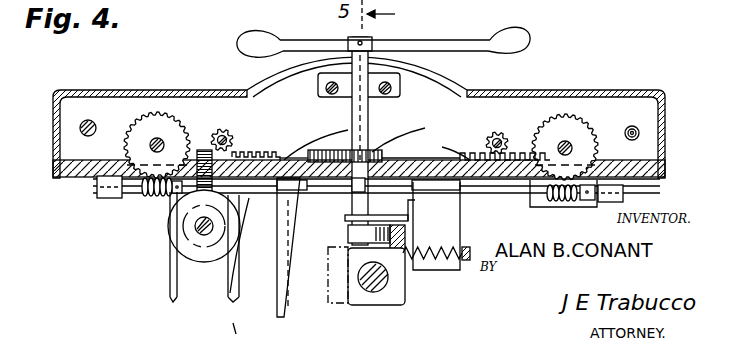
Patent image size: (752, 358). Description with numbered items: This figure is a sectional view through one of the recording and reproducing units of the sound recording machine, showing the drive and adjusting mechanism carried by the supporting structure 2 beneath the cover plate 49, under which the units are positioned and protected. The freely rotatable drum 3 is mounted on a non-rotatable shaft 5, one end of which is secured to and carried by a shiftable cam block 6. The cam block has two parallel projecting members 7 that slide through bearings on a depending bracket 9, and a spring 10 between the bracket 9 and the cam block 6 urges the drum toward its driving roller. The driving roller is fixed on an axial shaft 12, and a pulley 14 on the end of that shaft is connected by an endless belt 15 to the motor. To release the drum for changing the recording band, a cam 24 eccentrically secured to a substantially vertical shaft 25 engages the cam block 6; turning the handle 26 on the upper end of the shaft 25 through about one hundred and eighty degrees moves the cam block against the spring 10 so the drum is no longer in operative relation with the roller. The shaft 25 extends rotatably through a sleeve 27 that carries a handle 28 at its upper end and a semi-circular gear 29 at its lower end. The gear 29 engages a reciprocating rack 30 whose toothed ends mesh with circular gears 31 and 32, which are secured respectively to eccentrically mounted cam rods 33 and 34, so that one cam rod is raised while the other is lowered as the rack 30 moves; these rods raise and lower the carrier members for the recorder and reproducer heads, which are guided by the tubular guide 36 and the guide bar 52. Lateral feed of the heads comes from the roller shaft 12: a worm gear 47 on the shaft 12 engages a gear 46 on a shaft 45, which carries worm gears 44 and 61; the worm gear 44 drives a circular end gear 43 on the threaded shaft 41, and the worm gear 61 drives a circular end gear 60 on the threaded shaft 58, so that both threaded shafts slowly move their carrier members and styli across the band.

The supporting structure 2 is at (667, 173).
The drum 3 is at (230, 313).
The non-rotatable shaft 5 is at (376, 302).
The cam block 6 is at (372, 302).
The projecting members 7 is at (480, 215).
The depending bracket 9 is at (447, 220).
The spring 10 is at (433, 256).
The axial shaft 12 is at (200, 238).
The pulley 14 is at (205, 262).
The endless belt 15 is at (168, 286).
The cam 24 is at (348, 233).
The vertical shaft 25 is at (352, 207).
The handle 26 is at (522, 44).
The sleeve 27 is at (370, 116).
The handle 28 is at (240, 46).
The semi-circular gear 29 is at (413, 134).
The rack 30 is at (295, 158).
The circular gear 31 is at (489, 133).
The circular gear 32 is at (236, 150).
The cam rod 33 is at (501, 134).
The cam rod 34 is at (222, 130).
The tubular guide 36 is at (641, 132).
The threaded shaft 41 is at (567, 144).
The circular end gear 43 is at (588, 127).
The worm gear 44 is at (556, 205).
The shaft 45 is at (510, 223).
The gear 46 is at (180, 210).
The worm gear 47 is at (197, 237).
The cover plate 49 is at (645, 95).
The guide bar 52 is at (80, 128).
The threaded shaft 58 is at (150, 144).
The circular end gear 60 is at (156, 113).
The worm gear 61 is at (150, 198).